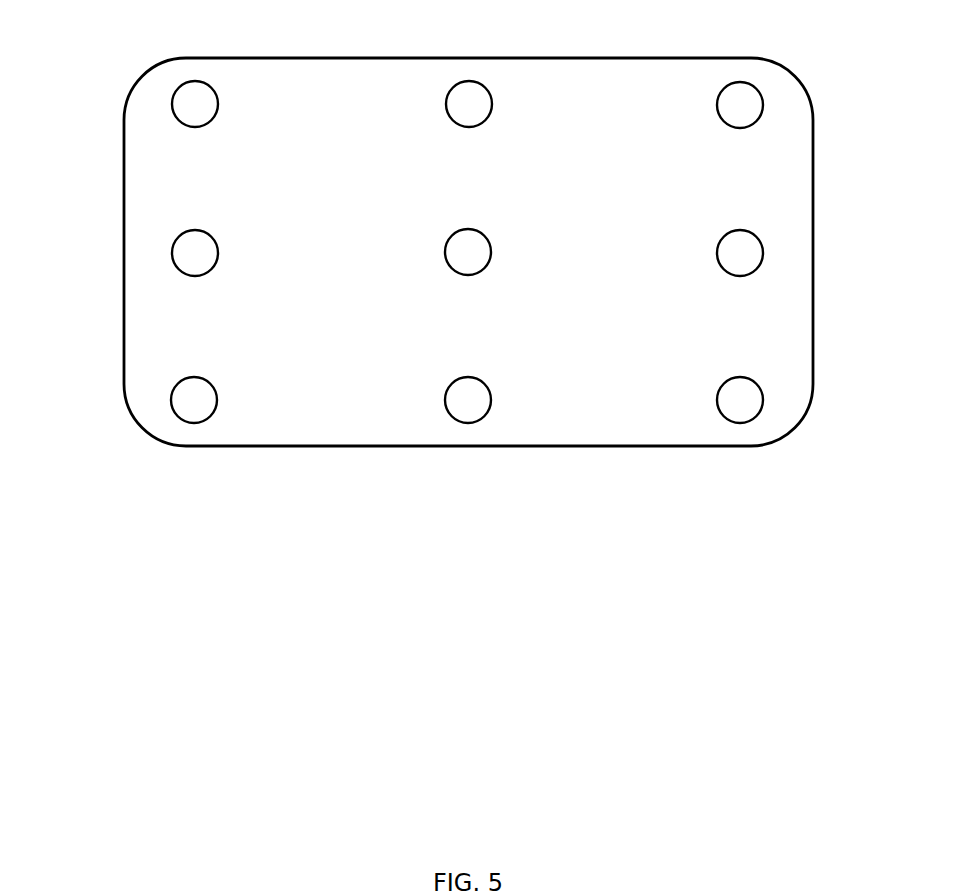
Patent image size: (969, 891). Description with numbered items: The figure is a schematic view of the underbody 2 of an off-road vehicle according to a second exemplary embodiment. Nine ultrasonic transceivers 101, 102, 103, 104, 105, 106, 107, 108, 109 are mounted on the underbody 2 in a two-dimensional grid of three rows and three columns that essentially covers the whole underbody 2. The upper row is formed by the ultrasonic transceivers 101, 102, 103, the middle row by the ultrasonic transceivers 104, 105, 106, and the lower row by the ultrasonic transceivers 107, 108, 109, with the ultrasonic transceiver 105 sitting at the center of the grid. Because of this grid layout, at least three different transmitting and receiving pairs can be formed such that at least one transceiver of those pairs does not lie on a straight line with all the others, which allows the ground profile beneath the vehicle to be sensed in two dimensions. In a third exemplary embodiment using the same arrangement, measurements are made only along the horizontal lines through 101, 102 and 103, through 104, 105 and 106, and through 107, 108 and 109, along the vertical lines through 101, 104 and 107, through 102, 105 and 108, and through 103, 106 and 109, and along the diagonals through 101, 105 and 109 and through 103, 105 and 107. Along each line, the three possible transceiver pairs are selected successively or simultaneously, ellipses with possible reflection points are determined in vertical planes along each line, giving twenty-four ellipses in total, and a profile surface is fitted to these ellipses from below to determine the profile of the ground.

The underbody 2 is at (618, 207).
The ultrasonic transceiver 101 is at (205, 82).
The ultrasonic transceiver 102 is at (481, 82).
The ultrasonic transceiver 103 is at (749, 83).
The ultrasonic transceiver 104 is at (172, 251).
The ultrasonic transceiver 105 is at (473, 277).
The ultrasonic transceiver 106 is at (763, 244).
The ultrasonic transceiver 107 is at (171, 400).
The ultrasonic transceiver 108 is at (488, 410).
The ultrasonic transceiver 109 is at (763, 402).